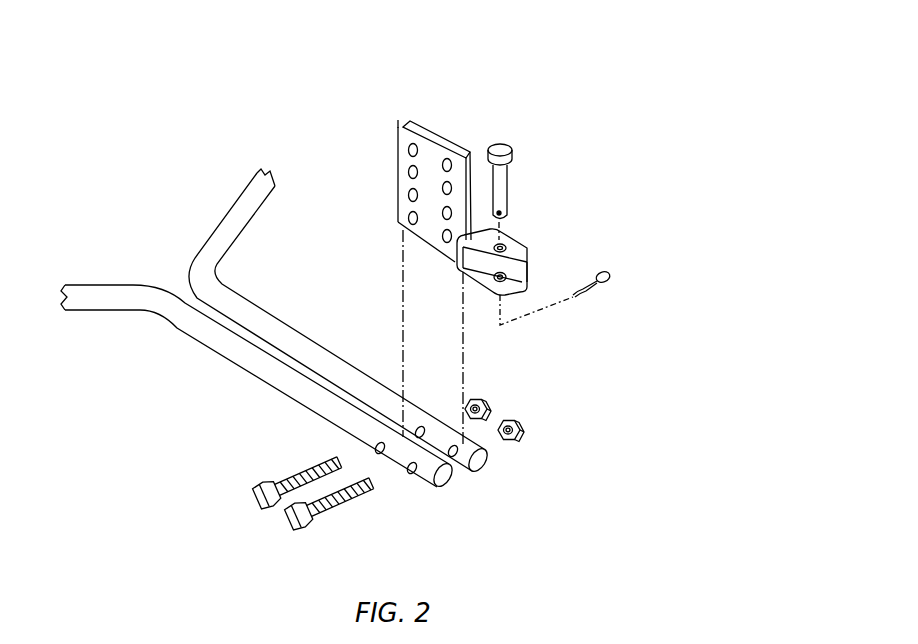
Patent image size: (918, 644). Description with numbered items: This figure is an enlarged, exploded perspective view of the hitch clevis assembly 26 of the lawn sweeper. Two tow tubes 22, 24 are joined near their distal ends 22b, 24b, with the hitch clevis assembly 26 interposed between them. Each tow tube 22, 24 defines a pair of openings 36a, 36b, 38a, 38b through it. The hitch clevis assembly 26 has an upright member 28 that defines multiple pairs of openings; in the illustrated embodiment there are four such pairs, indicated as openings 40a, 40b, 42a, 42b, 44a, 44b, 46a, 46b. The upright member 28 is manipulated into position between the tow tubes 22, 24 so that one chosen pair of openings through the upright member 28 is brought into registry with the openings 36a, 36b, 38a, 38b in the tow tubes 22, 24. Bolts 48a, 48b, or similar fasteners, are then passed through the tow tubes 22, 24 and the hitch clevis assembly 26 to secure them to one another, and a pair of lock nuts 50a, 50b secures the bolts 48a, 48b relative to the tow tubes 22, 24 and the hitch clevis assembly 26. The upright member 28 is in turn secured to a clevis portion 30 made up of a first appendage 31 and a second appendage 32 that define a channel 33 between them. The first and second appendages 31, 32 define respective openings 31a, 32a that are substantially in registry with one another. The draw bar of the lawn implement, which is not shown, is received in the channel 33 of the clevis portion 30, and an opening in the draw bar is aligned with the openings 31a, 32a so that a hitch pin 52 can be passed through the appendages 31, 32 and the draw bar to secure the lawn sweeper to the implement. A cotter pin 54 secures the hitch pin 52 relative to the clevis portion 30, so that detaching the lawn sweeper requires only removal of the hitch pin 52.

The tow tube 22 is at (93, 303).
The distal end of tow tube 22b is at (433, 490).
The tow tube 24 is at (250, 188).
The distal end of tow tube 24b is at (485, 463).
The hitch clevis assembly 26 is at (434, 104).
The upright member 28 is at (409, 217).
The clevis portion 30 is at (455, 270).
The first appendage 31 is at (510, 237).
The opening in first appendage 31a is at (527, 250).
The second appendage 32 is at (494, 291).
The opening in second appendage 32a is at (472, 281).
The channel 33 is at (522, 268).
The opening in tow tube 36a is at (374, 448).
The opening in tow tube 36b is at (408, 474).
The opening in tow tube 38a is at (421, 428).
The opening in tow tube 38b is at (455, 456).
The opening in upright member 40a is at (399, 120).
The opening in upright member 40b is at (451, 163).
The opening in upright member 42a is at (409, 148).
The opening in upright member 42b is at (451, 186).
The opening in upright member 44a is at (409, 171).
The opening in upright member 44b is at (451, 210).
The opening in upright member 46a is at (409, 194).
The opening in upright member 46b is at (452, 234).
The bolt 48a is at (258, 502).
The bolt 48b is at (297, 518).
The lock nut 50a is at (491, 404).
The lock nut 50b is at (524, 432).
The hitch pin 52 is at (512, 152).
The cotter pin 54 is at (608, 284).